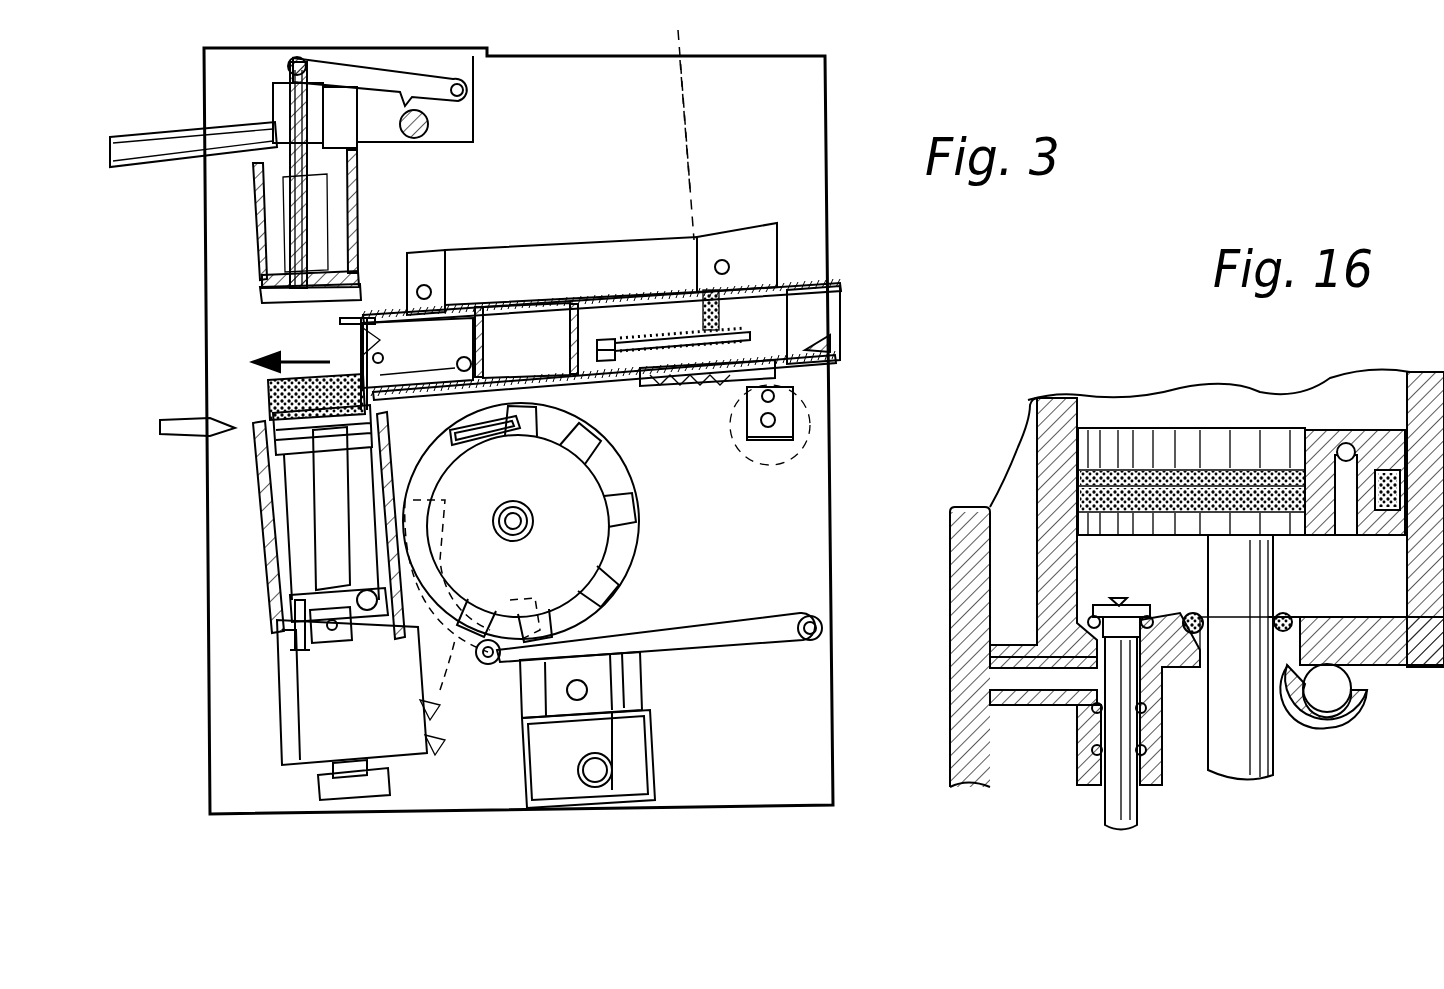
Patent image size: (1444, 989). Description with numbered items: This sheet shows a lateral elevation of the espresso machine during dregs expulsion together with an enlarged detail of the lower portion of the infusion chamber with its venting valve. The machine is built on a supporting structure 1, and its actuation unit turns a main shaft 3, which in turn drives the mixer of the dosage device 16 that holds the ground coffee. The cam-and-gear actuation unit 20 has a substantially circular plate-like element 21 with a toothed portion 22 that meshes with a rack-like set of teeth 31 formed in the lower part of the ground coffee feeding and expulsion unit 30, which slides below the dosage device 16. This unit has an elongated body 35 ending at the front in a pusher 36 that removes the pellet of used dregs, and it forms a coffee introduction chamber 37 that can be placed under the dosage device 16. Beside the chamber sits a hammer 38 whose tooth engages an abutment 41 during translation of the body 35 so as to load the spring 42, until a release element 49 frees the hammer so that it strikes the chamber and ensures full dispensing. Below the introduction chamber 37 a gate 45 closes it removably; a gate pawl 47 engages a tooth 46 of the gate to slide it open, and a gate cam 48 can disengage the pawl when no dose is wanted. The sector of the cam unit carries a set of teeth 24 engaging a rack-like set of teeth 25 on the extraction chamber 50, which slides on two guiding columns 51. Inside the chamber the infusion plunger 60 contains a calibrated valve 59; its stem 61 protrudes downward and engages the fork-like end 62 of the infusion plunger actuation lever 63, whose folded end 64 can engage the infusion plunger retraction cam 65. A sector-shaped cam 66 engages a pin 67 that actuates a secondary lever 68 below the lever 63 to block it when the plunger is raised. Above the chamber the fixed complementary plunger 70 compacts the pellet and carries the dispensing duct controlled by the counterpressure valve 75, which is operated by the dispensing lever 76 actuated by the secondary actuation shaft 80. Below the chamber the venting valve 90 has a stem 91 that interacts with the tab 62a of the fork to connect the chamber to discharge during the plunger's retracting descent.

In FIG. 3, the supporting structure 1 is at (848, 500).
In FIG. 3, the main shaft 3 is at (514, 530).
In FIG. 3, the dosage device 16 is at (700, 156).
In FIG. 3, the cam-and-gear actuation unit 20 is at (638, 582).
In FIG. 3, the plate-like element 21 is at (625, 525).
In FIG. 3, the toothed portion 22 is at (640, 480).
In FIG. 3, the set of teeth for the translatory motion of the extraction chamber 24 is at (558, 605).
In FIG. 3, the rack-like set of teeth for the translatory motion of the extraction chamber 25 is at (425, 665).
In FIG. 3, the ground coffee feeding and expulsion unit 30 is at (748, 268).
In FIG. 3, the rack-like set of teeth 31 is at (558, 450).
In FIG. 3, the elongated body 35 is at (822, 275).
In FIG. 3, the pusher 36 is at (352, 326).
In FIG. 3, the coffee introduction chamber 37 is at (531, 335).
In FIG. 3, the hammer 38 is at (598, 336).
In FIG. 3, the abutment of the hammer 41 is at (588, 345).
In FIG. 3, the spring 42 is at (626, 336).
In FIG. 3, the gate 45 is at (496, 398).
In FIG. 3, the tooth 46 is at (655, 385).
In FIG. 3, the gate pawl 47 is at (755, 440).
In FIG. 3, the gate cam 48 is at (784, 465).
In FIG. 3, the release element 49 is at (812, 335).
In FIG. 3, the extraction chamber 50 is at (262, 568).
In FIG. 16, the extraction chamber 50 is at (1052, 460).
In FIG. 3, the guiding columns 51 is at (330, 768).
In FIG. 16, the calibrated valve 59 is at (1346, 448).
In FIG. 3, the infusion plunger 60 is at (262, 470).
In FIG. 16, the infusion plunger 60 is at (1157, 445).
In FIG. 3, the stem 61 is at (320, 478).
In FIG. 16, the stem 61 is at (1240, 740).
In FIG. 3, the fork-like end 62 is at (340, 625).
In FIG. 3, the tab of the fork 62a is at (323, 736).
In FIG. 3, the infusion plunger actuation lever 63 is at (700, 633).
In FIG. 3, the folded end 64 is at (485, 445).
In FIG. 3, the infusion plunger retraction cam 65 is at (478, 420).
In FIG. 3, the sector-shaped cam 66 is at (437, 711).
In FIG. 3, the pin 67 is at (496, 665).
In FIG. 3, the secondary lever 68 is at (640, 685).
In FIG. 3, the fixed complementary plunger 70 is at (280, 205).
In FIG. 3, the dispensing counterpressure valve 75 is at (270, 112).
In FIG. 3, the dispensing lever 76 is at (372, 72).
In FIG. 3, the secondary actuation shaft 80 is at (413, 143).
In FIG. 3, the venting valve 90 is at (305, 625).
In FIG. 16, the venting valve 90 is at (1050, 765).
In FIG. 3, the stem 91 is at (306, 652).
In FIG. 16, the stem 91 is at (1122, 808).